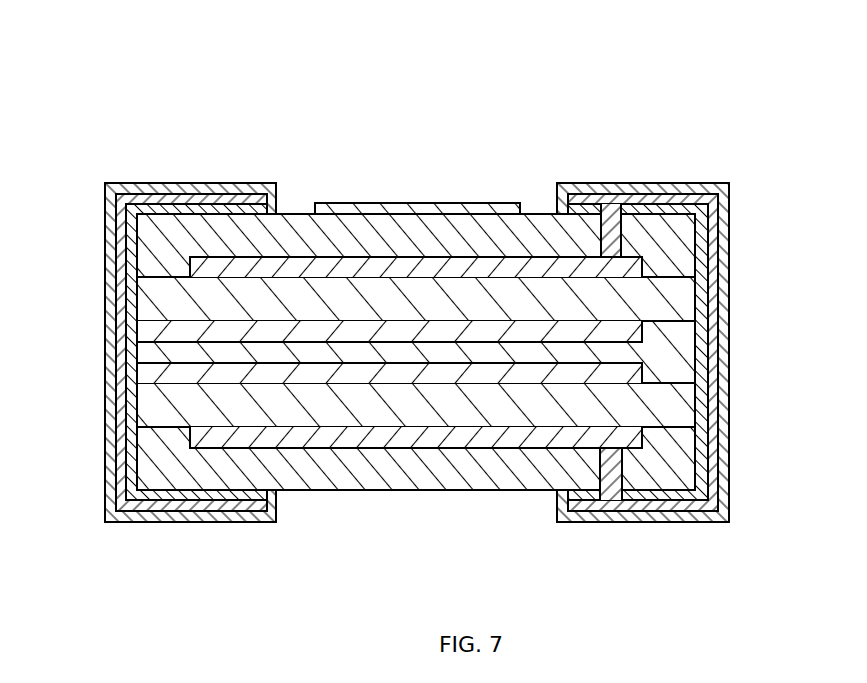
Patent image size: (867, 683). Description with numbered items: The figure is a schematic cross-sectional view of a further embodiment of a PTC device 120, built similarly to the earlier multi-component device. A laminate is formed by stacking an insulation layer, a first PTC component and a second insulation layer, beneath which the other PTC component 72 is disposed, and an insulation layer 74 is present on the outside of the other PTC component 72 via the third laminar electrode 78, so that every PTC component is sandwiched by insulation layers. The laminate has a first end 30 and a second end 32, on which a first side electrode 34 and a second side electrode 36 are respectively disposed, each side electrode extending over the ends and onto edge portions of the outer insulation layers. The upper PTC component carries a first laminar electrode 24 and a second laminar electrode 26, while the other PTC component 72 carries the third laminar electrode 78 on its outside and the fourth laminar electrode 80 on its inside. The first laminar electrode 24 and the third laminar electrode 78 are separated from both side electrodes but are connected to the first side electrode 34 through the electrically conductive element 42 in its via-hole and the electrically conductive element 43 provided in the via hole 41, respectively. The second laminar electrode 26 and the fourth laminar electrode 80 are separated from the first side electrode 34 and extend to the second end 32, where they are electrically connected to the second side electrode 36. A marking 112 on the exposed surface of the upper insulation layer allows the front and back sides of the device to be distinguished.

The PTC device 120 is at (420, 288).
The marking 112 is at (418, 204).
The electrically conductive element 42 is at (610, 220).
The via hole 41 is at (577, 506).
The electrically conductive element 43 is at (608, 470).
The second end 32 is at (162, 352).
The second side electrode 36 is at (125, 396).
The first end 30 is at (680, 247).
The first side electrode 34 is at (705, 330).
The other PTC component 72 is at (680, 404).
The insulation layer 74 is at (399, 492).
The first laminar electrode 24 is at (456, 268).
The second laminar electrode 26 is at (351, 330).
The fourth laminar electrode 80 is at (479, 372).
The third laminar electrode 78 is at (469, 442).